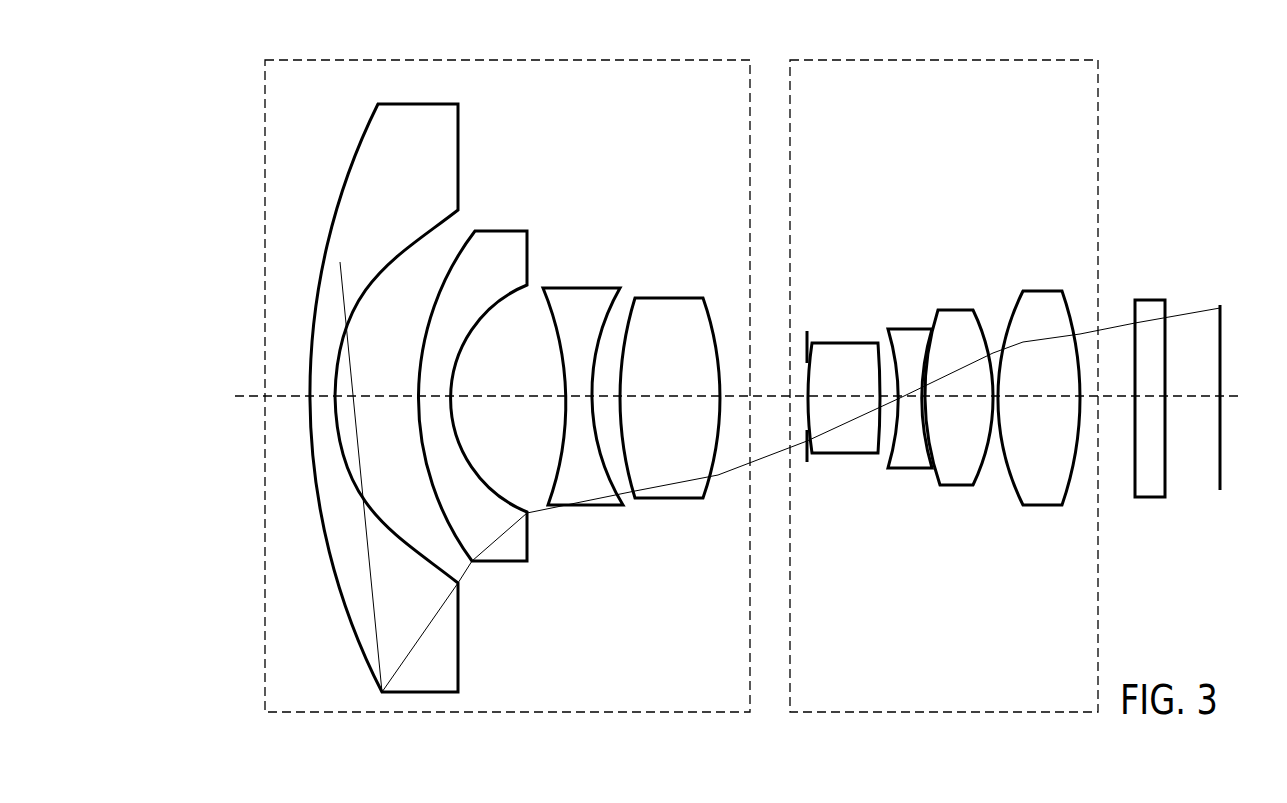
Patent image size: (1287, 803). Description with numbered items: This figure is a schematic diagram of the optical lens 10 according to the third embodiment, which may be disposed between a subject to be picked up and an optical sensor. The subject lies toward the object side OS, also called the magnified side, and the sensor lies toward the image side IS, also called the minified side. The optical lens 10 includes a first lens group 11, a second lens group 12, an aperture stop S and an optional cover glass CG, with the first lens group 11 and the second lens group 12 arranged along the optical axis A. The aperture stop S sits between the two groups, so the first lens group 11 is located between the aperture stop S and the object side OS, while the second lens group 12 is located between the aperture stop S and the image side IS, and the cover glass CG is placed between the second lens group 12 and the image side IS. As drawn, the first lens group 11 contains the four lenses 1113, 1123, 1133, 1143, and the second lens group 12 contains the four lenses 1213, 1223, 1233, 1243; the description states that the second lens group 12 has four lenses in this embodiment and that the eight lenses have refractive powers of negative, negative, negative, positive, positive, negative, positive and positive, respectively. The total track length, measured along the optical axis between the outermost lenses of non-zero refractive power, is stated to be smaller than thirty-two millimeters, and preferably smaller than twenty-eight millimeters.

The optical lens 10 is at (1153, 83).
The first lens group 11 is at (418, 60).
The second lens group 12 is at (867, 60).
The first lens 1113 is at (459, 125).
The second lens 1123 is at (488, 231).
The third lens 1133 is at (567, 288).
The fourth lens 1143 is at (667, 298).
The fifth lens 1213 is at (838, 343).
The sixth lens 1223 is at (893, 468).
The seventh lens 1233 is at (970, 288).
The eighth lens 1243 is at (1045, 291).
The aperture stop S is at (806, 462).
The cover glass CG is at (1148, 300).
The optical axis A is at (1112, 397).
The image side IS is at (1246, 397).
The object side OS is at (215, 396).